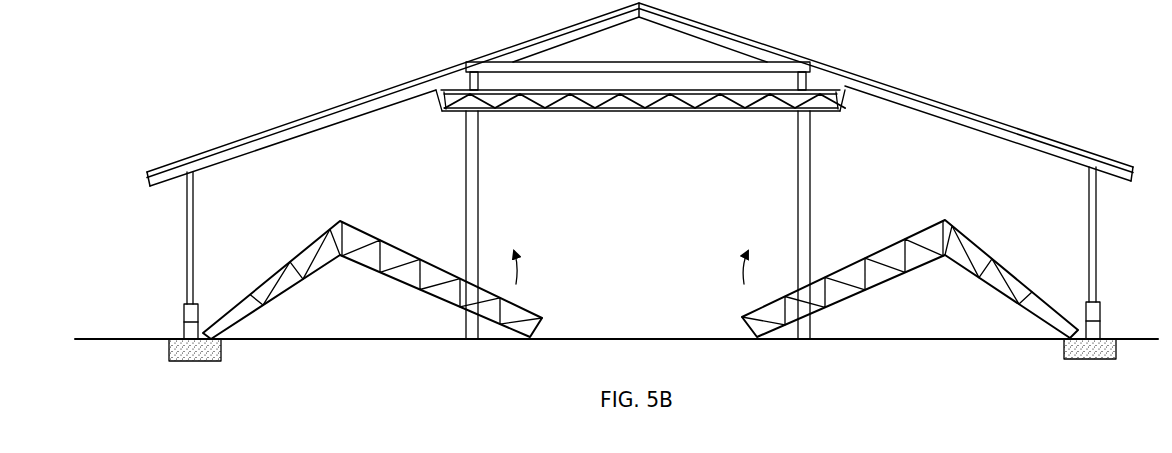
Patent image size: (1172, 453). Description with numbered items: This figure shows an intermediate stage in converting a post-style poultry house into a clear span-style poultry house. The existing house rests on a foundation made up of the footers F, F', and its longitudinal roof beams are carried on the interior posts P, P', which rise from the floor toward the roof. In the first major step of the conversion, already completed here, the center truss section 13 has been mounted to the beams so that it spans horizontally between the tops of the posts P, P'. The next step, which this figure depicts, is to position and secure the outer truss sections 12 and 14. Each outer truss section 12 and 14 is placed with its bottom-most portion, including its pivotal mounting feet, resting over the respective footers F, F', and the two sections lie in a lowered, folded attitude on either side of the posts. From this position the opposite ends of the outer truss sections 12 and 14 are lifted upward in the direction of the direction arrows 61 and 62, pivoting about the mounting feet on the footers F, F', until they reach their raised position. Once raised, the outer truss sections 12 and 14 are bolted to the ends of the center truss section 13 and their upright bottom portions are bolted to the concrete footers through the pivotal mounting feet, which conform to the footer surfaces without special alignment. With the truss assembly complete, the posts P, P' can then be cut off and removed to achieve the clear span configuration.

The outer truss section 12 is at (922, 214).
The center truss section 13 is at (642, 122).
The outer truss section 14 is at (371, 221).
The direction arrow 61 is at (749, 267).
The direction arrow 62 is at (522, 267).
The post P is at (827, 225).
The post P' is at (495, 225).
The footer F is at (1090, 374).
The footer F' is at (195, 375).